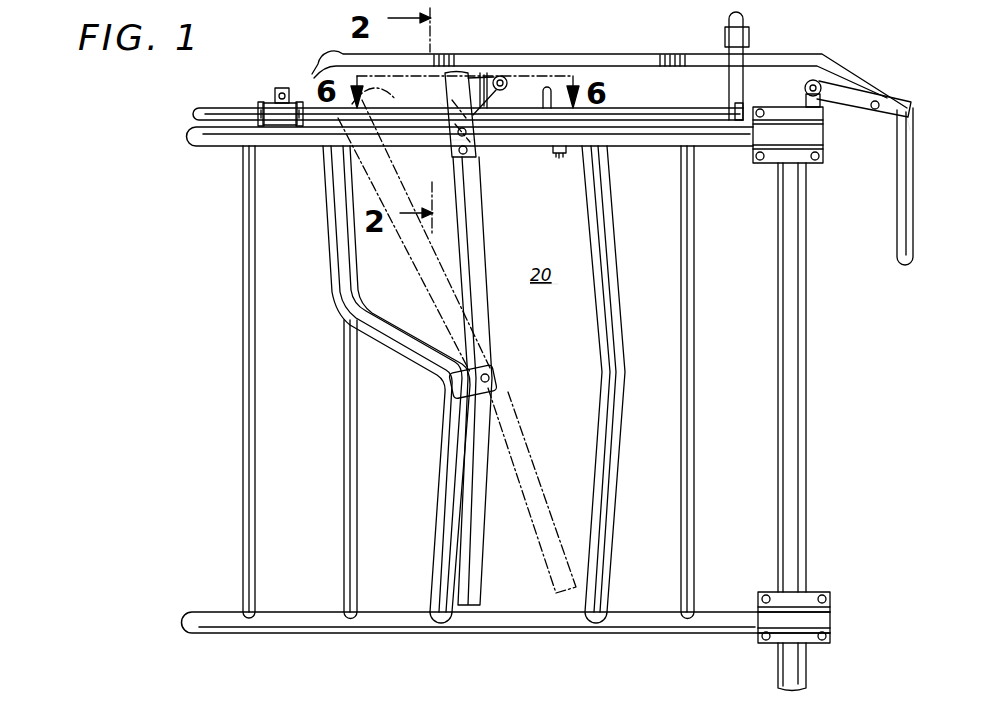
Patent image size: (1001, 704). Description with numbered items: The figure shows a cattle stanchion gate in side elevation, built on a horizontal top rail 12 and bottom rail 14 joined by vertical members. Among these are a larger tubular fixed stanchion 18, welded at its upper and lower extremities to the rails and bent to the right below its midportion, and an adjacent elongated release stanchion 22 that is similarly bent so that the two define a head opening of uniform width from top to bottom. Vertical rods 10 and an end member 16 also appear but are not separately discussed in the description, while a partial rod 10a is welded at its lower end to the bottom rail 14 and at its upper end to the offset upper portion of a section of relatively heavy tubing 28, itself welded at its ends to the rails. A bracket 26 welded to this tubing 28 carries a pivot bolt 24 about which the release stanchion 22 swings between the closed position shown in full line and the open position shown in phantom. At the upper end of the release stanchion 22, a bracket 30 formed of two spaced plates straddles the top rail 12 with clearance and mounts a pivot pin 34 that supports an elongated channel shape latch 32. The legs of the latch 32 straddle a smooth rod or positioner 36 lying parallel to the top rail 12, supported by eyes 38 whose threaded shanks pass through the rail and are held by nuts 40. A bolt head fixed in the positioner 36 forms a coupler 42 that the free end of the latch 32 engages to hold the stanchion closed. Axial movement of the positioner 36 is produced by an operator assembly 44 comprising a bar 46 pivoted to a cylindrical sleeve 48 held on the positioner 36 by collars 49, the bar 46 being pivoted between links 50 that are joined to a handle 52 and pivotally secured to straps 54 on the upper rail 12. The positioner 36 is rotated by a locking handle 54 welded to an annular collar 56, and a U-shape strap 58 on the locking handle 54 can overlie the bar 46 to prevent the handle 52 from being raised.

The vertical post 10 is at (255, 430).
The partial rod 10a is at (357, 449).
The top rail 12 is at (292, 146).
The bottom rail 14 is at (292, 612).
The end post 16 is at (806, 355).
The fixed stanchion 18 is at (610, 264).
The release stanchion 22 is at (486, 246).
The pivot bolt 24 is at (490, 377).
The bracket 26 is at (458, 392).
The tubing 28 is at (390, 330).
The bracket 30 is at (478, 74).
The latch 32 is at (447, 132).
The pivot pin 34 is at (505, 77).
The positioner 36 is at (634, 108).
The eye 38 is at (546, 98).
The nut 40 is at (555, 153).
The coupler 42 is at (440, 103).
The operator assembly 44 is at (912, 136).
The bar 46 is at (658, 58).
The cylindrical sleeve 48 is at (273, 103).
The collars 49 is at (258, 108).
The links 50 is at (855, 104).
The handle 52 is at (897, 207).
The locking handle 54 is at (729, 16).
The annular collar 56 is at (746, 120).
The U-shape strap 58 is at (750, 34).